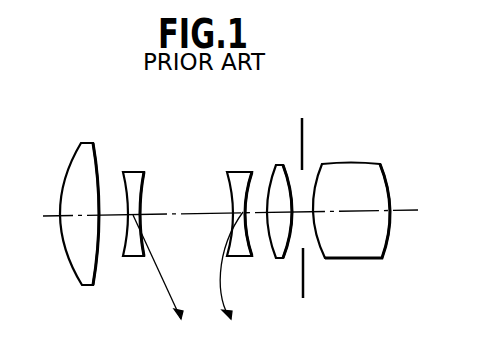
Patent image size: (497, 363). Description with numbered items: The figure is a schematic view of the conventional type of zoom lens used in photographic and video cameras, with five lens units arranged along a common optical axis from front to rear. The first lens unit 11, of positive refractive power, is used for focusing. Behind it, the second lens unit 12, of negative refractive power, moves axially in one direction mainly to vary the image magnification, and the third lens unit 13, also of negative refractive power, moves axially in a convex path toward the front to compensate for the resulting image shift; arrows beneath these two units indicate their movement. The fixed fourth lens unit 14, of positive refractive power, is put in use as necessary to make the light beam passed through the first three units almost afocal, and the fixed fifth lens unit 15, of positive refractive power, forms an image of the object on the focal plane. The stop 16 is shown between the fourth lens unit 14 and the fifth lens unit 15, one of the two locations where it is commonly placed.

The first lens unit 11 is at (88, 145).
The second lens unit 12 is at (133, 172).
The third lens unit 13 is at (238, 172).
The fourth lens unit 14 is at (279, 165).
The fifth lens unit 15 is at (353, 164).
The stop 16 is at (303, 138).